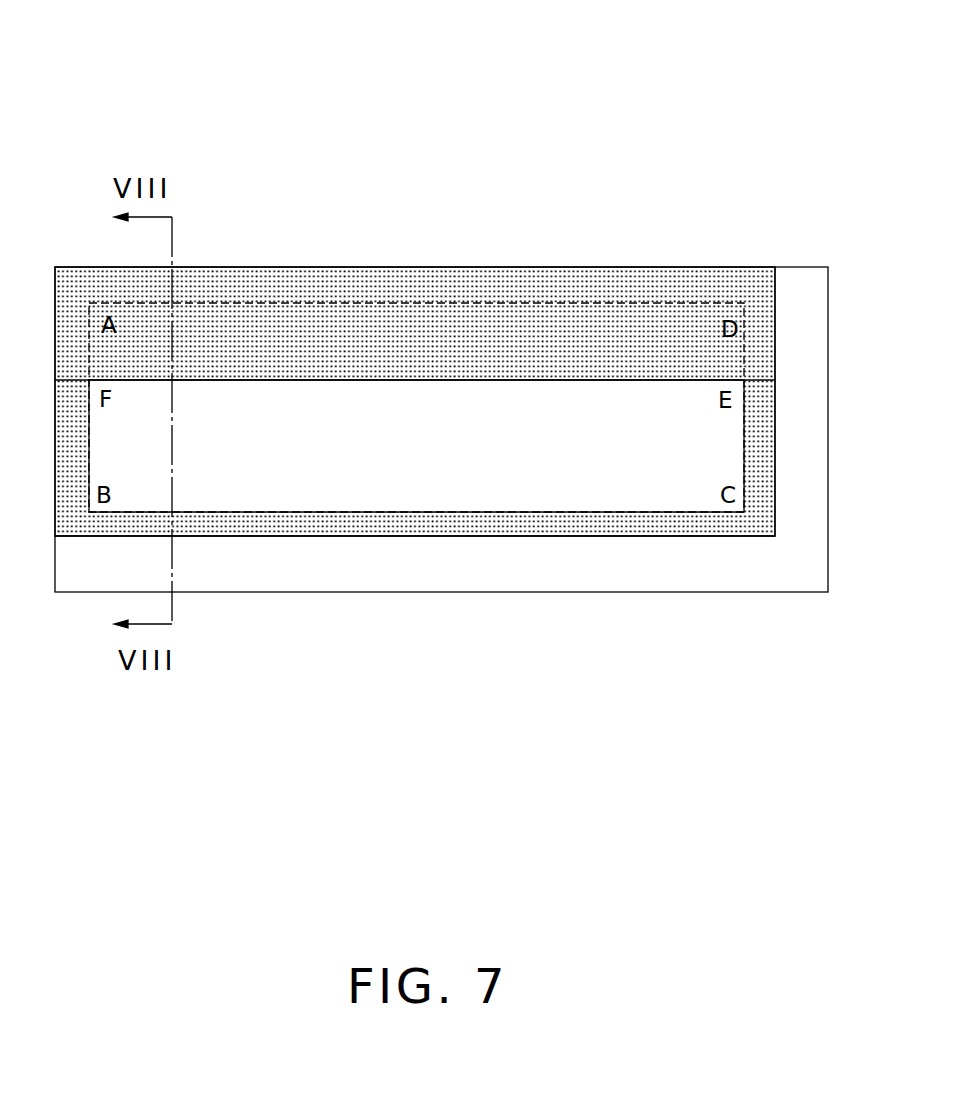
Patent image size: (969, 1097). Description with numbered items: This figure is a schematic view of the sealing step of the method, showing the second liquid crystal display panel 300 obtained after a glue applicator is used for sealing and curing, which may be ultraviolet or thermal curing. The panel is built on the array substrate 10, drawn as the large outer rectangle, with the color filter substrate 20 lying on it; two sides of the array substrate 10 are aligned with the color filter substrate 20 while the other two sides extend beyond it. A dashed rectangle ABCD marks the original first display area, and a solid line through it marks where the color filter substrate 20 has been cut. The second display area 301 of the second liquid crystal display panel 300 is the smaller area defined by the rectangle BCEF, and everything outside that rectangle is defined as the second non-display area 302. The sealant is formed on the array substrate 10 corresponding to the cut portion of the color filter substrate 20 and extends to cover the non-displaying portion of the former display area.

The second liquid crystal display panel 300 is at (477, 328).
The array substrate 10 is at (808, 340).
The color filter substrate 20 is at (776, 303).
The second display area 301 is at (455, 479).
The second non-display area 302 is at (547, 573).